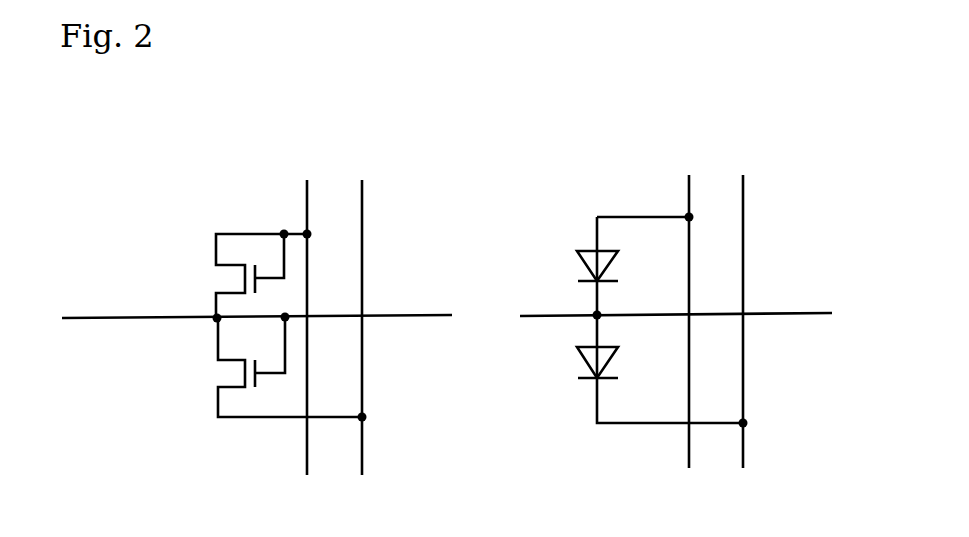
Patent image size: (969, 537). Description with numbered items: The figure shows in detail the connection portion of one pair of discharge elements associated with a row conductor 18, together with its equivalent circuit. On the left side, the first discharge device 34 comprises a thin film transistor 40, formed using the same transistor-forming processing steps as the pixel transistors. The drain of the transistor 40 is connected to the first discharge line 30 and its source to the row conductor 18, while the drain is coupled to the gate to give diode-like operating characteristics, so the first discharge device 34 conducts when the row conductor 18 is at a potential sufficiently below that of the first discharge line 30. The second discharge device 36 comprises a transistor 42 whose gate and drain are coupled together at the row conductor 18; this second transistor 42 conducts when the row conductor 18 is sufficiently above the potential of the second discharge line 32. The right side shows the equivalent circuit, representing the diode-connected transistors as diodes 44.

The row conductor 18 is at (176, 318).
The first discharge line 30 is at (309, 207).
The second discharge line 32 is at (363, 217).
The first discharge device 34 is at (172, 243).
The second discharge device 36 is at (172, 361).
The thin film transistor 40 is at (232, 262).
The transistor 42 is at (231, 390).
The diodes 44 is at (575, 265).